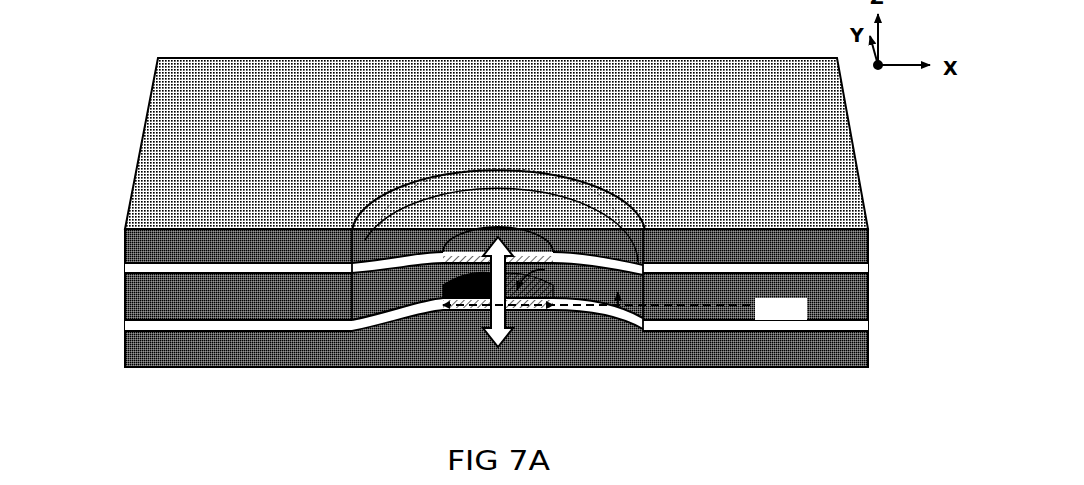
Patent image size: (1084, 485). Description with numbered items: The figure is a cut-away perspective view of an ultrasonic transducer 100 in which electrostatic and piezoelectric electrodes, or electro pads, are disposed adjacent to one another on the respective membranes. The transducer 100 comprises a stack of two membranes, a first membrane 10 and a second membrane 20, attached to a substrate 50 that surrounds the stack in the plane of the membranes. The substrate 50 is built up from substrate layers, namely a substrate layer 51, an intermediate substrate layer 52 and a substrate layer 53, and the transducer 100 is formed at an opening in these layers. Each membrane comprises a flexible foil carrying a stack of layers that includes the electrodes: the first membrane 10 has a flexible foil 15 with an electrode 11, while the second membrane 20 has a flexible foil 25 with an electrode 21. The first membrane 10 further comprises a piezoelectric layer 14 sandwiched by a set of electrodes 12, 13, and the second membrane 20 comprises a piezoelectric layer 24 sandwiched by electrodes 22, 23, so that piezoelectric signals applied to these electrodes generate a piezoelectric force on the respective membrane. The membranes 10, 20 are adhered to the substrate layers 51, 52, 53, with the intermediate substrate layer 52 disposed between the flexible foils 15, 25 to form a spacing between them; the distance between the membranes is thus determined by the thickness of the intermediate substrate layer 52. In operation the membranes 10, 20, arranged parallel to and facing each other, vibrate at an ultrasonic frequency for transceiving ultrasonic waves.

The ultrasonic transducer 100 is at (455, 215).
The substrate 50 is at (157, 182).
The substrate layer 51 is at (122, 245).
The first membrane 10 is at (122, 270).
The intermediate substrate layer 52 is at (118, 297).
The second membrane 20 is at (120, 322).
The substrate layer 53 is at (120, 347).
The flexible foil 15 is at (378, 253).
The electrode 22 is at (335, 361).
The piezoelectric layer 24 is at (335, 361).
The electrode 23 is at (410, 300).
The flexible foil 25 is at (420, 325).
The electrode 12 is at (490, 351).
The piezoelectric layer 14 is at (490, 351).
The electrode 13 is at (428, 280).
The electrode 21 is at (548, 272).
The electrode 11 is at (578, 278).